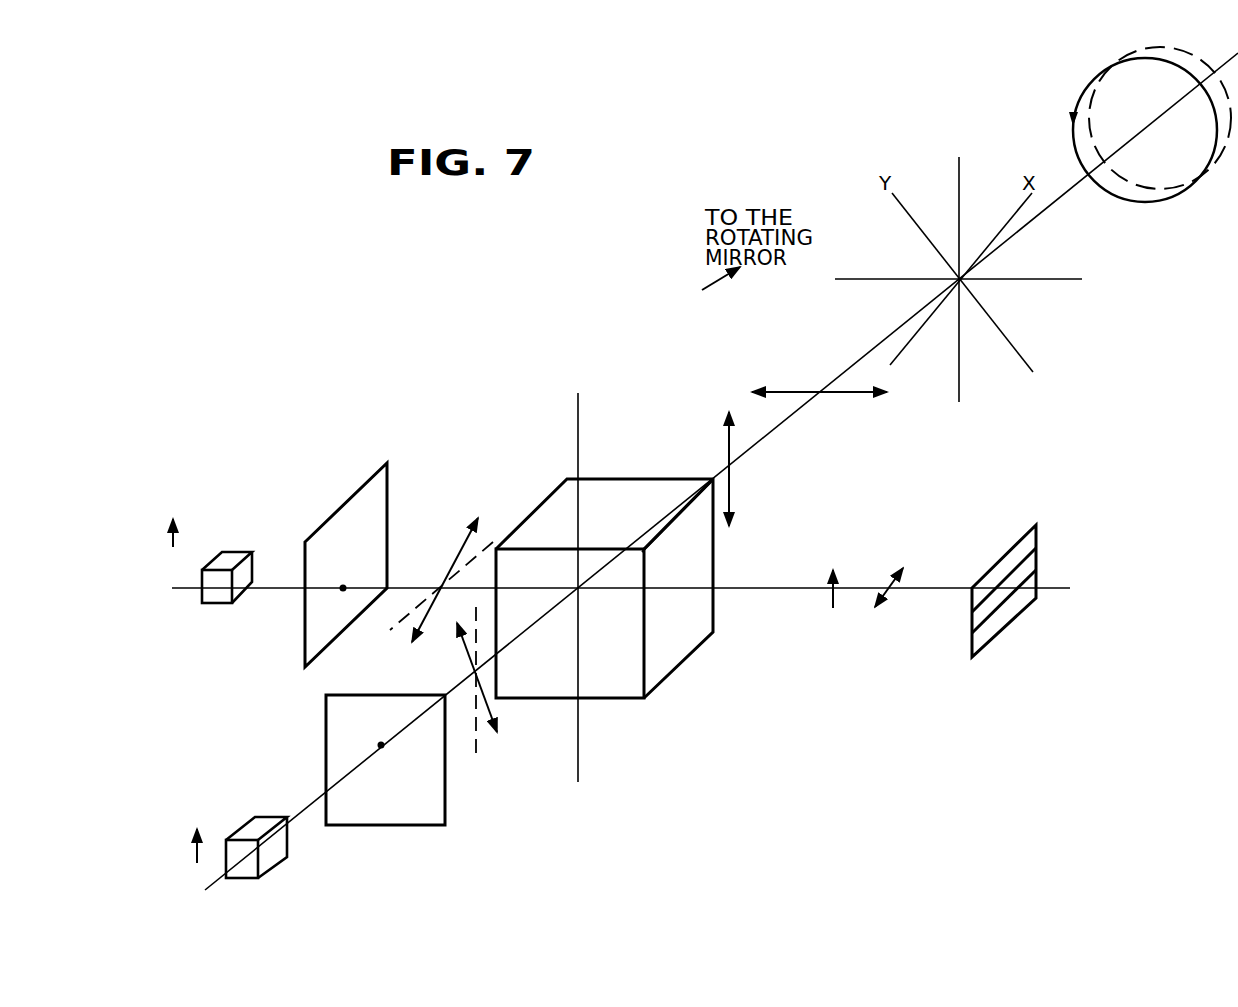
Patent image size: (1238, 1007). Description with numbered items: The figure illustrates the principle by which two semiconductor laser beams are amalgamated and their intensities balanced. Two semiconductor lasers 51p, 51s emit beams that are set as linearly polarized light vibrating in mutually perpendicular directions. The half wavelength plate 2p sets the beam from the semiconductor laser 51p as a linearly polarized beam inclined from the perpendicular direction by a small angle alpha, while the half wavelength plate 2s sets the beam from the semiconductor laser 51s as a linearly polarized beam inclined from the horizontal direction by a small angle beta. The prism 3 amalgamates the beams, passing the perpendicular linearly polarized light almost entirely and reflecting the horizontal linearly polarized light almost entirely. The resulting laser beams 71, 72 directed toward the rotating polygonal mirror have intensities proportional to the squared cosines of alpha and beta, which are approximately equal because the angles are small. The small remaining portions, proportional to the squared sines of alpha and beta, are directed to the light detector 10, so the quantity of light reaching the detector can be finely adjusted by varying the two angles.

The semiconductor laser 51s is at (235, 548).
The semiconductor laser 51p is at (262, 817).
The ½ wavelength plate 2s is at (350, 498).
The ½ wavelength plate 2p is at (408, 825).
The prism 3 is at (640, 479).
The laser beam 71 is at (732, 497).
The laser beam 72 is at (797, 390).
The light detector 10 is at (1036, 552).